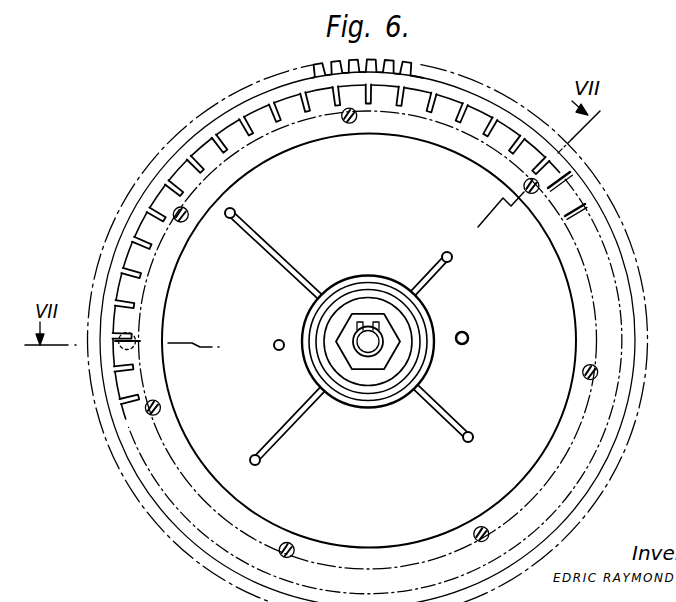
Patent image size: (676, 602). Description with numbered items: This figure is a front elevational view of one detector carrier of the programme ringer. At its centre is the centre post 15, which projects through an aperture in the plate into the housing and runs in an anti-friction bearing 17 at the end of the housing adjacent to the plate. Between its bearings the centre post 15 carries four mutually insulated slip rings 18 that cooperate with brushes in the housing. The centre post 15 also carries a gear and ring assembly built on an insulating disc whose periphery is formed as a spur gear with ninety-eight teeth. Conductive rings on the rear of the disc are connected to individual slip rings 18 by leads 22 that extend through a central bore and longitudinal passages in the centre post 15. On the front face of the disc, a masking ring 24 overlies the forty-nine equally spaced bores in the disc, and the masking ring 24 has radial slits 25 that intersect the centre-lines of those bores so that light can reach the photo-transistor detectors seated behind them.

The centre post 15 is at (338, 342).
The anti-friction bearing 17 is at (433, 352).
The slip rings 18 is at (378, 394).
The leads 22 is at (281, 256).
The masking ring 24 is at (446, 126).
The radial slits 25 is at (552, 152).